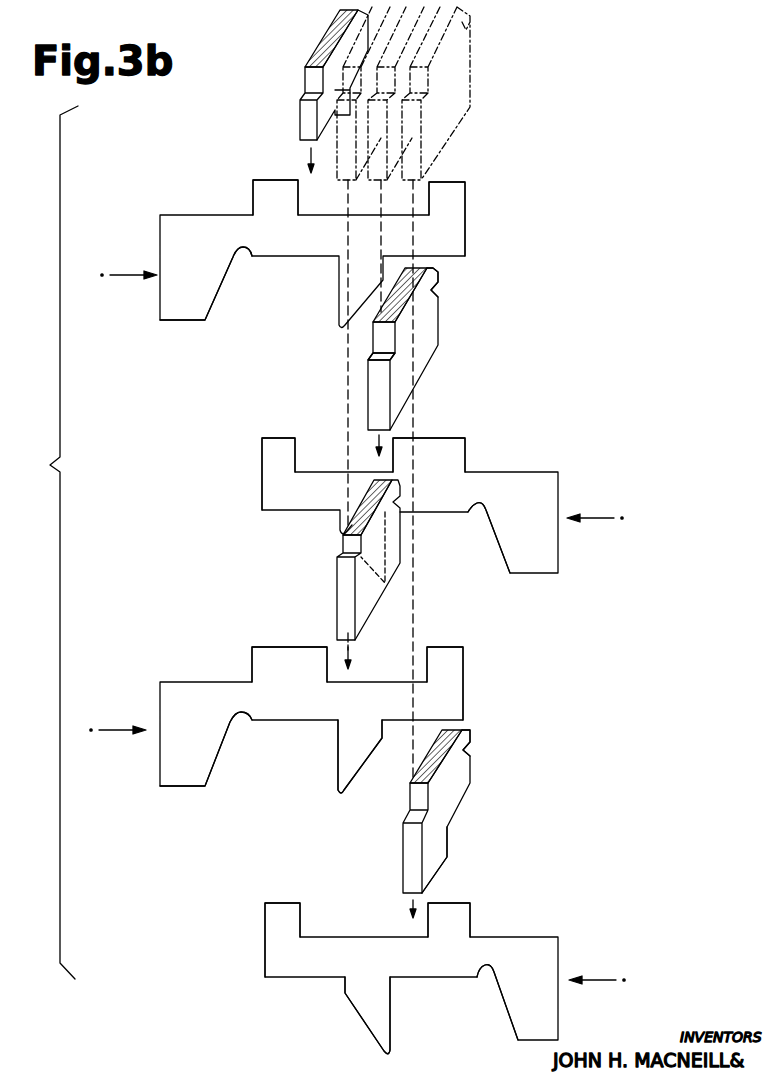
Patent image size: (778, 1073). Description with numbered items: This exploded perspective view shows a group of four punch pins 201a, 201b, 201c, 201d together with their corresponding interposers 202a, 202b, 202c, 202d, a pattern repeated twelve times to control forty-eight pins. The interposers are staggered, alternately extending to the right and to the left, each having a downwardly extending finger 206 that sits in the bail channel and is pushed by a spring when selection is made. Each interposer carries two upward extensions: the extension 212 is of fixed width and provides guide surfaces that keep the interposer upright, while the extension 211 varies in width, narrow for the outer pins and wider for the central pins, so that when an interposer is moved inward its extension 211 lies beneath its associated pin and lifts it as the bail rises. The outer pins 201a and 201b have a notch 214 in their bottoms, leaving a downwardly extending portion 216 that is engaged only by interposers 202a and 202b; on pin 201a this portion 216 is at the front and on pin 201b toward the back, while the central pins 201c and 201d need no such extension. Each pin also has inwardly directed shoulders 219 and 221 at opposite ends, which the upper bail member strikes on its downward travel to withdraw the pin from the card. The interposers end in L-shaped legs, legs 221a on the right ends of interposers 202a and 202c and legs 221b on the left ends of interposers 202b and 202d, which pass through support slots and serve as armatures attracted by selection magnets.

The punch pin 201a is at (447, 835).
The punch pin 201b is at (318, 44).
The punch pin 201c is at (427, 313).
The punch pin 201d is at (348, 559).
The interposer 202a is at (543, 935).
The interposer 202b is at (218, 176).
The interposer 202c is at (528, 478).
The interposer 202d is at (195, 681).
The downwardly extending finger 206 is at (347, 763).
The upward extension 211 is at (282, 181).
The upward extension 212 is at (453, 182).
The notch 214 is at (463, 800).
The downwardly extending portion 216 is at (433, 860).
The shoulder 219 is at (380, 354).
The shoulder 221 is at (428, 278).
The leg 221a is at (553, 546).
The leg 221b is at (172, 297).